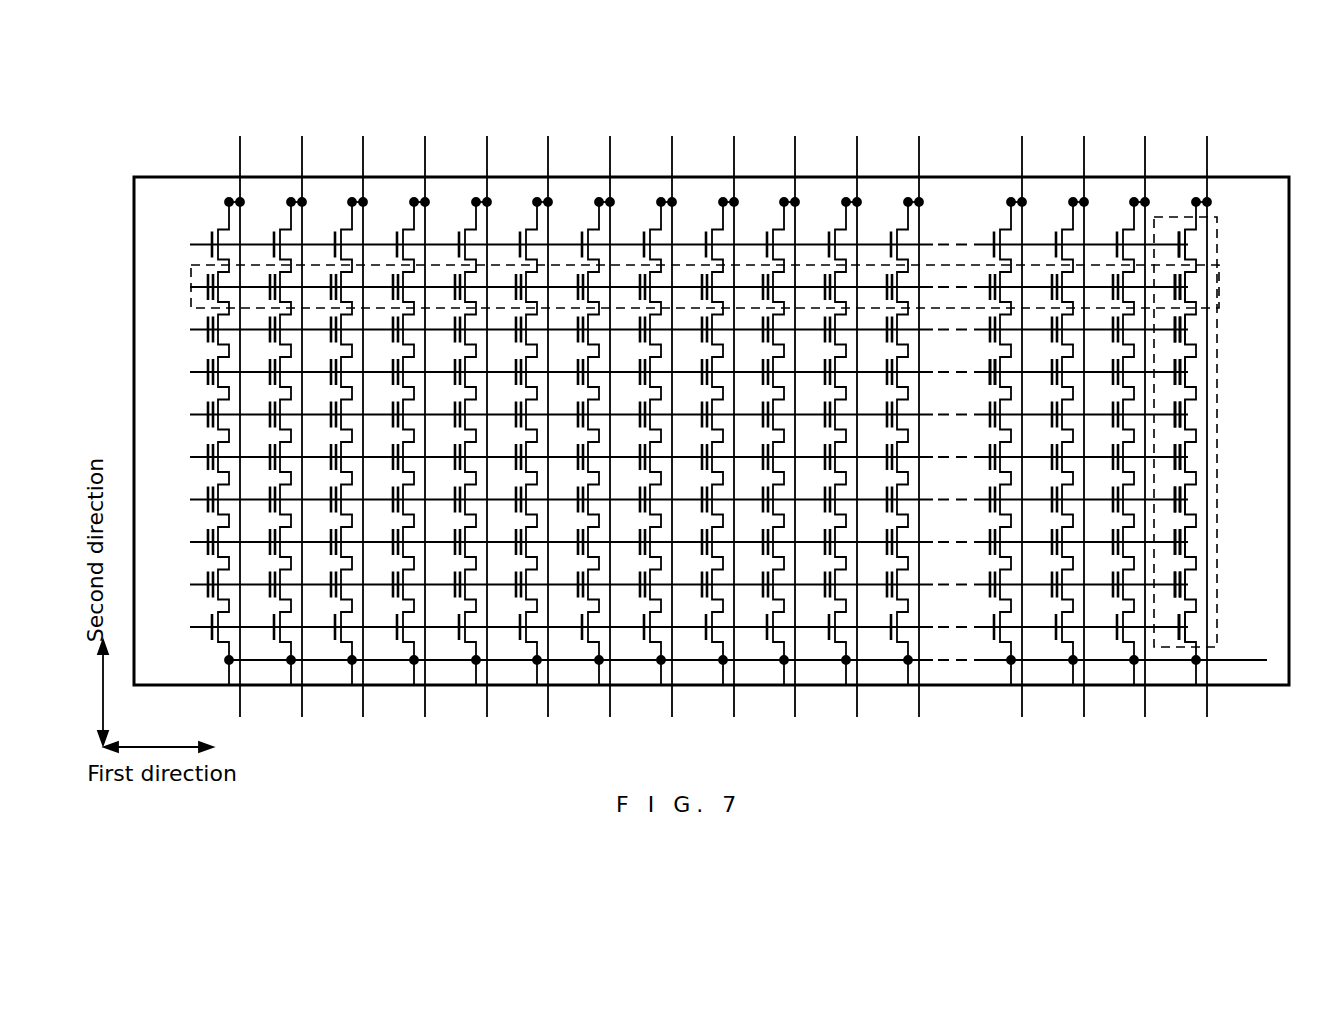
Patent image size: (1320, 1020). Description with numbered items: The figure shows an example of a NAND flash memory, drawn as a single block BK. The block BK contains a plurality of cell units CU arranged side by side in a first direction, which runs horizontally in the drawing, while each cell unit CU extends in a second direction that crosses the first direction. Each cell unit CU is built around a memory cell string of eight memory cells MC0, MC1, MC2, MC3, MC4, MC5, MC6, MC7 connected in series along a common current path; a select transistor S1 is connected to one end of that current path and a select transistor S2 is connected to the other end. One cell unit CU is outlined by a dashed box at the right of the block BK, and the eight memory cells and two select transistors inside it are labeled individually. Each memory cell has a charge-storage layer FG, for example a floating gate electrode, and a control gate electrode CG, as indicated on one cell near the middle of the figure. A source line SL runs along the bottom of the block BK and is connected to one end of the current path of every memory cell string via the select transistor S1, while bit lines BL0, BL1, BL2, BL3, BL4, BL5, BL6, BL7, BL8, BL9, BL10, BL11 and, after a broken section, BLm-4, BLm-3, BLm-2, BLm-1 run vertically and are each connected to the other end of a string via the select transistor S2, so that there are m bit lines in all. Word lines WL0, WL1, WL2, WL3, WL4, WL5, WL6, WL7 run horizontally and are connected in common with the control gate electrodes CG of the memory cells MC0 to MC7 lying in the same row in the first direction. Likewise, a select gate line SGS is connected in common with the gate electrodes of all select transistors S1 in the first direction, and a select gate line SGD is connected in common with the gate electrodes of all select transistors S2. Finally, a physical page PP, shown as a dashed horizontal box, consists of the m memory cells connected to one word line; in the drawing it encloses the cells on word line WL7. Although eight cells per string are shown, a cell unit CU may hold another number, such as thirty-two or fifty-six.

The block BK is at (958, 177).
The bit line BL0 is at (234, 409).
The bit line BL1 is at (296, 409).
The bit line BL2 is at (357, 409).
The bit line BL3 is at (419, 409).
The bit line BL4 is at (481, 409).
The bit line BL5 is at (542, 409).
The bit line BL6 is at (604, 409).
The bit line BL7 is at (666, 409).
The bit line BL8 is at (728, 409).
The bit line BL9 is at (789, 409).
The bit line BL10 is at (855, 409).
The bit line BL11 is at (917, 409).
The bit line BLm-4 is at (1022, 409).
The bit line BLm-3 is at (1084, 409).
The bit line BLm-2 is at (1145, 409).
The bit line BLm-1 is at (1207, 409).
The select gate line SGD is at (663, 244).
The select gate line SGS is at (664, 627).
The word line WL0 is at (663, 584).
The word line WL1 is at (663, 542).
The word line WL2 is at (663, 499).
The word line WL3 is at (663, 457).
The word line WL4 is at (663, 414).
The word line WL5 is at (663, 372).
The word line WL6 is at (663, 329).
The word line WL7 is at (663, 287).
The source line SL is at (1245, 662).
The physical page PP is at (499, 265).
The cell unit CU is at (1217, 222).
The select transistor S1 is at (1219, 627).
The select transistor S2 is at (1219, 245).
The memory cell MC0 is at (1227, 585).
The memory cell MC1 is at (1227, 542).
The memory cell MC2 is at (1227, 500).
The memory cell MC3 is at (1227, 457).
The memory cell MC4 is at (1227, 415).
The memory cell MC5 is at (1227, 372).
The memory cell MC6 is at (1227, 330).
The memory cell MC7 is at (1227, 287).
The control gate electrode CG is at (990, 378).
The charge-storage layer FG is at (996, 384).